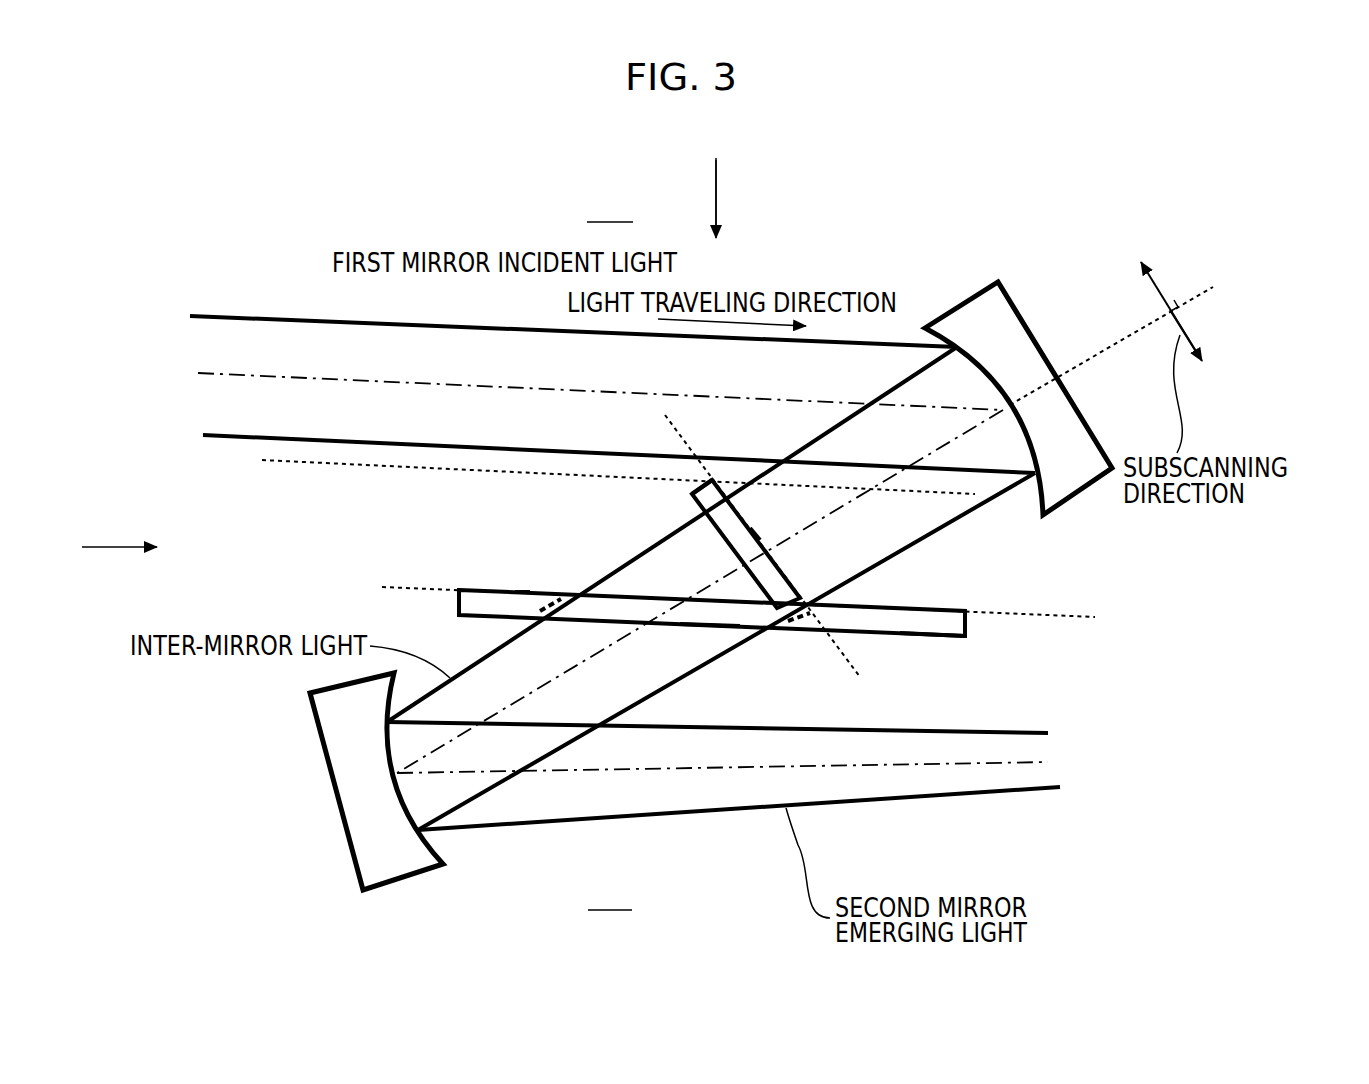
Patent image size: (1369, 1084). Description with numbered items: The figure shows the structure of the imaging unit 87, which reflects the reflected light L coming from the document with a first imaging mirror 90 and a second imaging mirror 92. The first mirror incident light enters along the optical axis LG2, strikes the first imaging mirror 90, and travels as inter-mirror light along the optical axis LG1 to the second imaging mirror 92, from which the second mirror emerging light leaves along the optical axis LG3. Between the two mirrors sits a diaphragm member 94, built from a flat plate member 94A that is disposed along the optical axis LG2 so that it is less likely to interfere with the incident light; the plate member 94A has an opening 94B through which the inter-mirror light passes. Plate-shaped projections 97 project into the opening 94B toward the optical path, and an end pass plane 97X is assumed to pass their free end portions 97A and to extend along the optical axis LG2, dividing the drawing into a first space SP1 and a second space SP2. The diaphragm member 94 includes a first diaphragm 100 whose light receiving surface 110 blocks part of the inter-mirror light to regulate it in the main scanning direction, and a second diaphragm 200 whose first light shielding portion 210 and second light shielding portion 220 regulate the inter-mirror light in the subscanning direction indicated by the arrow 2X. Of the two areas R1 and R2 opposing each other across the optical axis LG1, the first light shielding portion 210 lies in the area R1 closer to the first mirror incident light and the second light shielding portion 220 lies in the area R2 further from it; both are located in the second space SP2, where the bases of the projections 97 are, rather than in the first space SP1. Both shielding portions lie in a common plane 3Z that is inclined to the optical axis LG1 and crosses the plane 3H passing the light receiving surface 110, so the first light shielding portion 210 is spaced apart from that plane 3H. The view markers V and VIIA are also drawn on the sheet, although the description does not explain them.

The imaging unit 87 is at (884, 242).
The first imaging mirror 90 is at (1013, 290).
The second imaging mirror 92 is at (350, 874).
The diaphragm member 94 is at (978, 629).
The plate member 94A is at (935, 638).
The opening 94B is at (708, 604).
The projections 97 is at (722, 525).
The free end portions 97A is at (713, 480).
The end pass plane 97X is at (320, 462).
The first diaphragm 100 is at (790, 557).
The light receiving surface 110 is at (758, 533).
The second diaphragm 200 is at (520, 585).
The first light shielding portion 210 is at (561, 587).
The second light shielding portion 220 is at (842, 599).
The arrow 2X is at (1180, 317).
The plane 3H is at (850, 672).
The common plane 3Z is at (1070, 615).
The reflected light L is at (324, 316).
The optical axis of the inter-mirror light LG1 is at (432, 752).
The optical axis of the first mirror incident light LG2 is at (240, 372).
The optical axis of the second mirror emerging light LG3 is at (960, 765).
The area R1 is at (1145, 243).
The area R2 is at (1245, 408).
The first space SP1 is at (610, 208).
The second space SP2 is at (610, 896).
The section line V is at (720, 181).
The section line VIIA is at (119, 526).